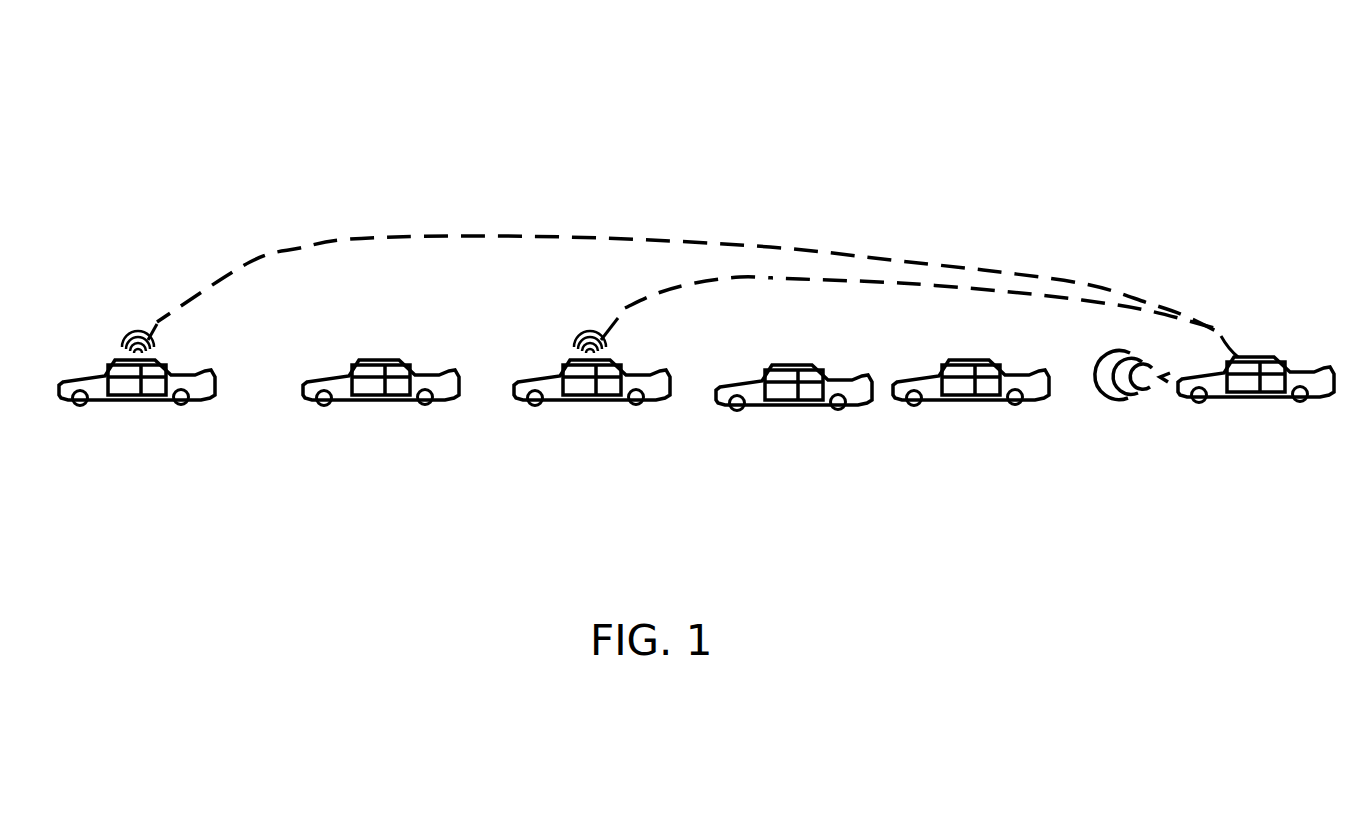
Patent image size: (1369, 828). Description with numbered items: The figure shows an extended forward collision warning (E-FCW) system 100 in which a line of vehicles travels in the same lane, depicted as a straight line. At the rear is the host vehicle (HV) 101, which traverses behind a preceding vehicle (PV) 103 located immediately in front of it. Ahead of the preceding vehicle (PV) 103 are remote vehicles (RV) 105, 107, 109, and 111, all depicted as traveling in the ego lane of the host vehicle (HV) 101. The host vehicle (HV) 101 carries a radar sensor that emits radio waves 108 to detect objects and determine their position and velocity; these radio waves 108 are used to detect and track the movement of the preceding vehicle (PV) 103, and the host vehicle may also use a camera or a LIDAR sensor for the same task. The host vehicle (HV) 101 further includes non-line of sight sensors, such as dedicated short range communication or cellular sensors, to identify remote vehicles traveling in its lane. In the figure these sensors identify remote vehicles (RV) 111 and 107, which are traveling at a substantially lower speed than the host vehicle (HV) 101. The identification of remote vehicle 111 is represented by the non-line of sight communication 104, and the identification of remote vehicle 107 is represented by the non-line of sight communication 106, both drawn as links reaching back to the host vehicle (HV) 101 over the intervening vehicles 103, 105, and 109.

The extended forward collision warning (E-FCW) system 100 is at (923, 160).
The host vehicle (HV) 101 is at (1262, 402).
The preceding vehicle (PV) 103 is at (963, 405).
The non-line of sight communication 104 is at (348, 240).
The remote vehicle (RV) 105 is at (797, 408).
The non-line of sight communication 106 is at (638, 297).
The remote vehicle (RV) 107 is at (605, 405).
The radio waves 108 is at (1122, 400).
The remote vehicle (RV) 109 is at (375, 405).
The remote vehicle (RV) 111 is at (140, 405).